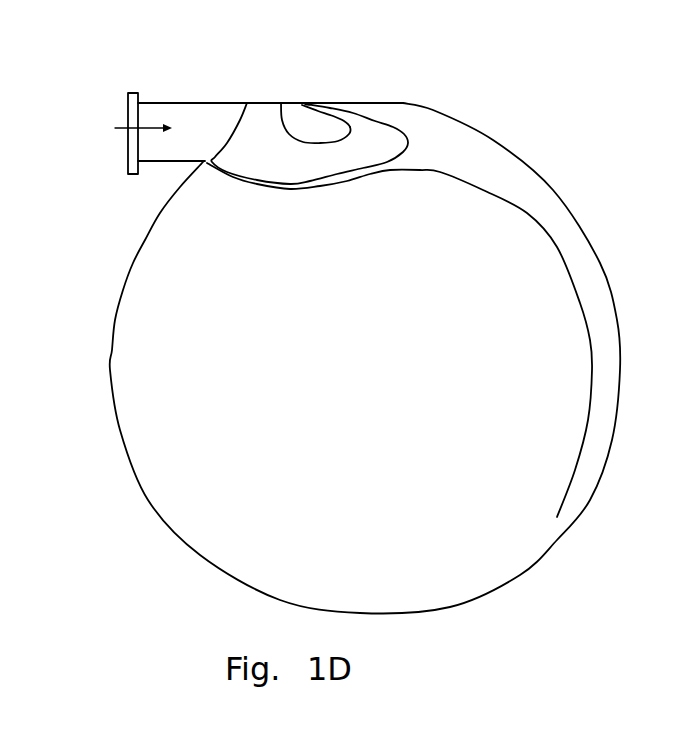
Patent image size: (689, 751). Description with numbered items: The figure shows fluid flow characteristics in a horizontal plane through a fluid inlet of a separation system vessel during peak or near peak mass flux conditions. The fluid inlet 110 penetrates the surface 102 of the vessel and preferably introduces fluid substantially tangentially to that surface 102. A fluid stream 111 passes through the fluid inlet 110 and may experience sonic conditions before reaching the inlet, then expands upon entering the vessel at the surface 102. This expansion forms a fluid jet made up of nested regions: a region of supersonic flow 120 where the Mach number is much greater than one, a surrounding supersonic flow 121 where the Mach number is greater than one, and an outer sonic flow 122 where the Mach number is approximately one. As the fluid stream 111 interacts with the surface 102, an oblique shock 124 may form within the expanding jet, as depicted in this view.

The surface 102 is at (123, 269).
The fluid inlet 110 is at (182, 103).
The fluid stream 111 is at (141, 176).
The region of supersonic flow 120 is at (294, 117).
The supersonic flow 121 is at (258, 117).
The sonic flow 122 is at (452, 137).
The oblique shock 124 is at (335, 122).